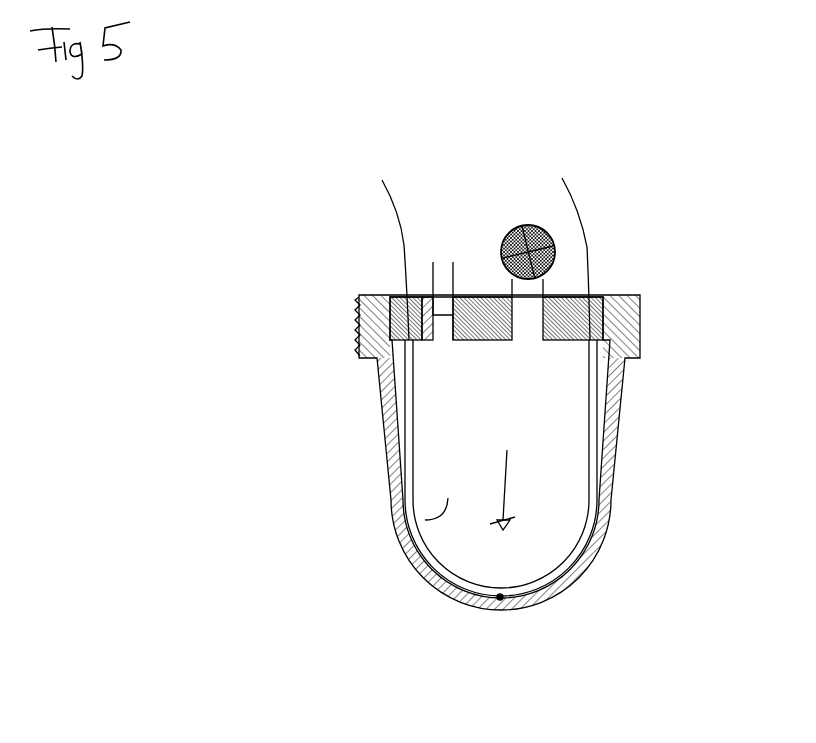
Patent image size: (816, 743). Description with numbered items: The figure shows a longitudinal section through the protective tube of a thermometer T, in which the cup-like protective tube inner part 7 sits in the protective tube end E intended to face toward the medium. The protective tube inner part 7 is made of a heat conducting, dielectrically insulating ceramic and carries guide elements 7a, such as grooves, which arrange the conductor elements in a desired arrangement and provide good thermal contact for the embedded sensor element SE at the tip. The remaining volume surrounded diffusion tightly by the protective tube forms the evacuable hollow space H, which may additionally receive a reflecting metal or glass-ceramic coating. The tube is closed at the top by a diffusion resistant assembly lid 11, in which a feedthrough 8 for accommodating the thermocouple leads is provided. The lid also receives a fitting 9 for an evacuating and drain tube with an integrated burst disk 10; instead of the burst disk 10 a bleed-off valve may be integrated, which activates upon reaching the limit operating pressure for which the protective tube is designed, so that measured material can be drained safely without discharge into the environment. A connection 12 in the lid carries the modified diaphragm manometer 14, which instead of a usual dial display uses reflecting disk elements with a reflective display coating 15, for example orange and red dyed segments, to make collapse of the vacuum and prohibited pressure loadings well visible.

The feedthrough for accommodating thermocouple leads 8 is at (592, 298).
The fitting for evacuating- and drain tube 9 is at (433, 272).
The burst disk 10 is at (436, 280).
The assembly lid 11 is at (590, 297).
The connection for diaphragm manometer 12 is at (547, 280).
The modified diaphragm manometer 14 is at (542, 222).
The reflective display coating 15 is at (527, 224).
The thermometer T is at (270, 212).
The protective tube end E is at (385, 557).
The guide elements 7a is at (567, 588).
The sensor element SE is at (500, 620).
The hollow space H is at (565, 425).
The protective tube inner part 7 is at (438, 472).